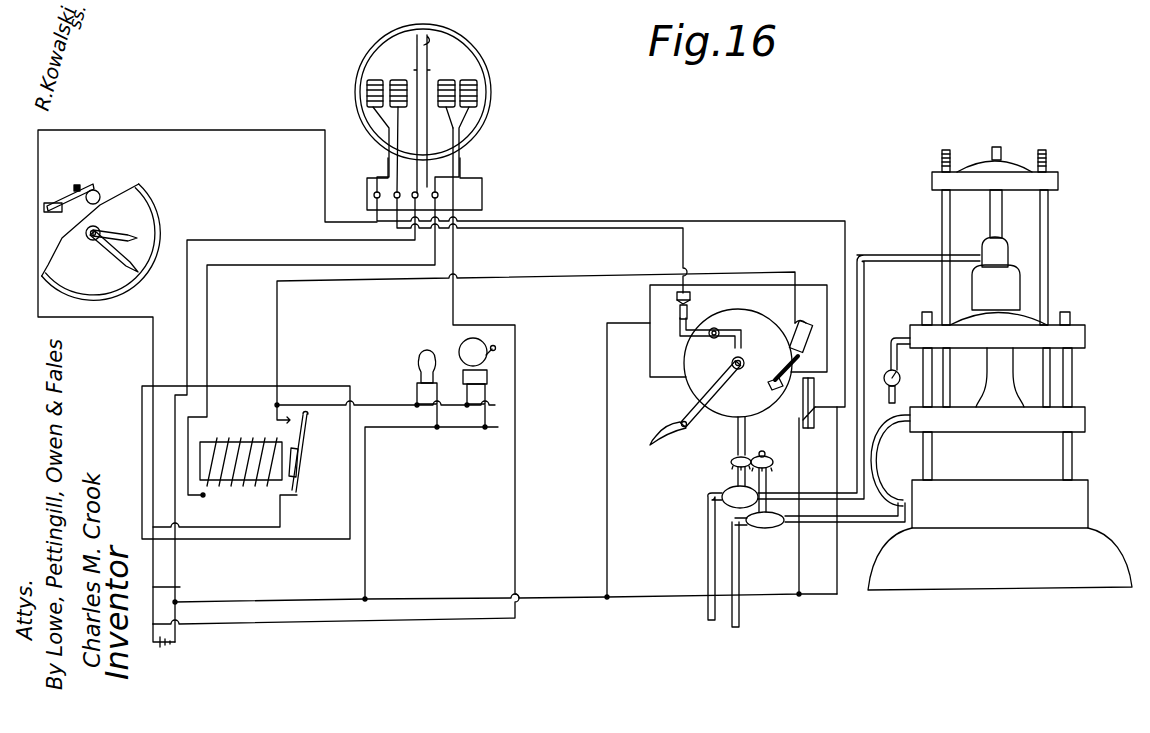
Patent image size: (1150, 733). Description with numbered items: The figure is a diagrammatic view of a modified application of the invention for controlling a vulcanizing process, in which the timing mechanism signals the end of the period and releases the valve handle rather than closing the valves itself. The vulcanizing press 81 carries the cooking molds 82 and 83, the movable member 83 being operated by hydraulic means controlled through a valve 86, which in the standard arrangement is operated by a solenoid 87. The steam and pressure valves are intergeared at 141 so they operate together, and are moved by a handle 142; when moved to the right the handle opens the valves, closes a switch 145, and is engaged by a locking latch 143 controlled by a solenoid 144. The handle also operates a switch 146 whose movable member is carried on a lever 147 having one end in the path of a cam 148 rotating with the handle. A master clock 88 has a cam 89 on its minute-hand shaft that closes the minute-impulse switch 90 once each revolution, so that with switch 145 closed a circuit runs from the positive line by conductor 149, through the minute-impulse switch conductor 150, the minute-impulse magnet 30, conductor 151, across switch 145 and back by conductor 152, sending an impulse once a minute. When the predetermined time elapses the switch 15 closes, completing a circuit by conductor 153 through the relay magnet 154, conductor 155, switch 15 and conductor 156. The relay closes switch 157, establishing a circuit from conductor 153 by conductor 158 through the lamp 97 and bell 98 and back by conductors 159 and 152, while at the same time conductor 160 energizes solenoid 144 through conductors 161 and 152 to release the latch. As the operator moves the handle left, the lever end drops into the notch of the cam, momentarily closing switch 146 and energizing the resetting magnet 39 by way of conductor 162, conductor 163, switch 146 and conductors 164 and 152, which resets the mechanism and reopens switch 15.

The switch 15 is at (428, 43).
The minute-impulse magnet 30 is at (367, 88).
The resetting magnet 39 is at (478, 88).
The vulcanizing press 81 is at (997, 456).
The cooking mold 82 is at (1000, 504).
The movable member 83 is at (997, 419).
The valve 86 is at (735, 490).
The solenoid 87 is at (821, 521).
The master clock 88 is at (140, 226).
The cam 89 is at (97, 192).
The minute-impulse switch 90 is at (80, 188).
The lamp 97 is at (423, 357).
The bell 98 is at (463, 346).
The intergearing 141 is at (733, 463).
The handle 142 is at (693, 407).
The locking latch 143 is at (773, 358).
The solenoid 144 is at (796, 324).
The switch 145 is at (803, 392).
The switch 146 is at (692, 302).
The lever 147 is at (704, 341).
The cam 148 is at (731, 365).
The conductor 149 is at (184, 582).
The minute-impulse switch conductor 150 is at (38, 150).
The conductor 151 is at (557, 221).
The conductor 152 is at (572, 597).
The conductor 153 is at (238, 539).
The relay magnet 154 is at (238, 442).
The conductor 155 is at (207, 327).
The conductor 156 is at (260, 240).
The switch 157 is at (298, 462).
The conductor 158 is at (382, 404).
The conductor 159 is at (365, 458).
The conductor 160 is at (277, 327).
The conductor 161 is at (837, 546).
The conductor 162 is at (515, 513).
The conductor 163 is at (557, 228).
The conductor 164 is at (607, 512).